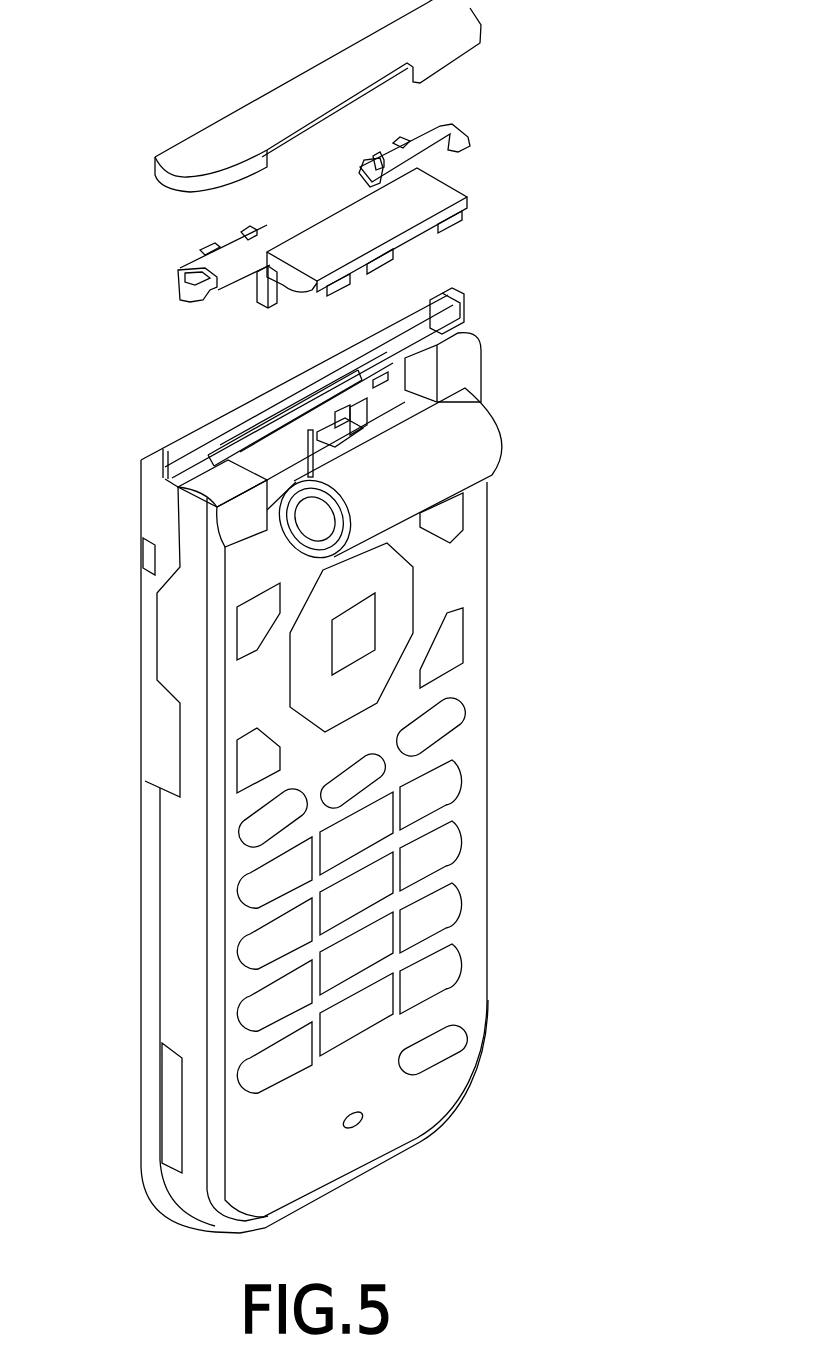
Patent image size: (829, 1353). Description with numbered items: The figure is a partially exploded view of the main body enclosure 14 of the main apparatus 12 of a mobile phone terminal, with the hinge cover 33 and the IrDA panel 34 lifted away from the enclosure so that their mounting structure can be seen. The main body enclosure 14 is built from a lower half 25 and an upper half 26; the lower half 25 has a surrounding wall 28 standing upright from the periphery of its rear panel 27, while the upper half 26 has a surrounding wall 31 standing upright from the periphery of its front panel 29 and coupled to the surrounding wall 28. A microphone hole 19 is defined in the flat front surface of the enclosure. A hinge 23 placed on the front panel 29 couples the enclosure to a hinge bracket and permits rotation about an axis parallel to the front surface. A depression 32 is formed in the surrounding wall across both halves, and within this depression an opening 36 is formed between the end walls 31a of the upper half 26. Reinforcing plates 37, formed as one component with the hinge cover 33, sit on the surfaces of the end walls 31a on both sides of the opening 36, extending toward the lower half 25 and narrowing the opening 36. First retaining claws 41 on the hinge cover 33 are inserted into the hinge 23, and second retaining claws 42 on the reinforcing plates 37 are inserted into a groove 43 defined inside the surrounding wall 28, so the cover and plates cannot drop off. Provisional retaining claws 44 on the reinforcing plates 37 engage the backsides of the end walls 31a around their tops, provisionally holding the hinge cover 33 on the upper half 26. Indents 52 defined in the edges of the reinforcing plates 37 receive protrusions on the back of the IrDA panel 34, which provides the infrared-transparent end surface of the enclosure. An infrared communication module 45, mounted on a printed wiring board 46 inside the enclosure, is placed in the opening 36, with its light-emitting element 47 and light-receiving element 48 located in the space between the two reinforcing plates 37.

The main apparatus 12 is at (518, 718).
The main body enclosure 14 is at (485, 595).
The microphone hole 19 is at (360, 1125).
The hinge 23 is at (500, 435).
The lower half 25 is at (146, 973).
The upper half 26 is at (174, 1003).
The rear panel 27 is at (140, 692).
The surrounding wall 28 is at (150, 832).
The front panel 29 is at (483, 932).
The surrounding wall 31 is at (176, 870).
The end walls 31a is at (460, 352).
The depression 32 is at (165, 480).
The hinge cover 33 is at (455, 193).
The IrDA panel 34 is at (283, 90).
The opening 36 is at (464, 316).
The reinforcing plates 37 is at (461, 136).
The first retaining claws 41 is at (462, 212).
The second retaining claws 42 is at (400, 140).
The groove 43 is at (407, 333).
The provisional retaining claws 44 is at (190, 303).
The infrared communication module 45 is at (343, 413).
The printed wiring board 46 is at (297, 432).
The light-emitting element 47 is at (333, 437).
The light-receiving element 48 is at (368, 427).
The indents 52 is at (377, 163).